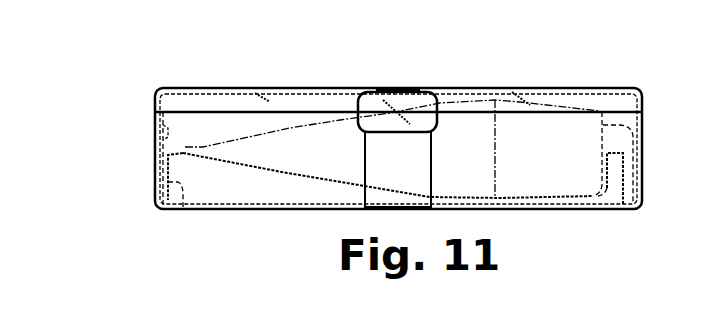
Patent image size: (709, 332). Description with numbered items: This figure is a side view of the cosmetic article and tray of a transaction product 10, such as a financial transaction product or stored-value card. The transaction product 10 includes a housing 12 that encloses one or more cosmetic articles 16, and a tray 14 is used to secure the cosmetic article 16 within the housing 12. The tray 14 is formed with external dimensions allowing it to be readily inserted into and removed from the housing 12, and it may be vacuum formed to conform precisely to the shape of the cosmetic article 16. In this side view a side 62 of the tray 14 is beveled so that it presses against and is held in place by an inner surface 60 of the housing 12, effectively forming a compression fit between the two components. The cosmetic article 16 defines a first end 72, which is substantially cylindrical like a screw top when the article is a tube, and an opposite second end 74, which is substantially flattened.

The transaction product 10 is at (626, 53).
The housing 12 is at (540, 88).
The tray 14 is at (616, 190).
The cosmetic article 16 is at (463, 133).
The inner surface 60 is at (160, 133).
The side 62 is at (183, 207).
The first end 72 is at (640, 134).
The second end 74 is at (204, 140).